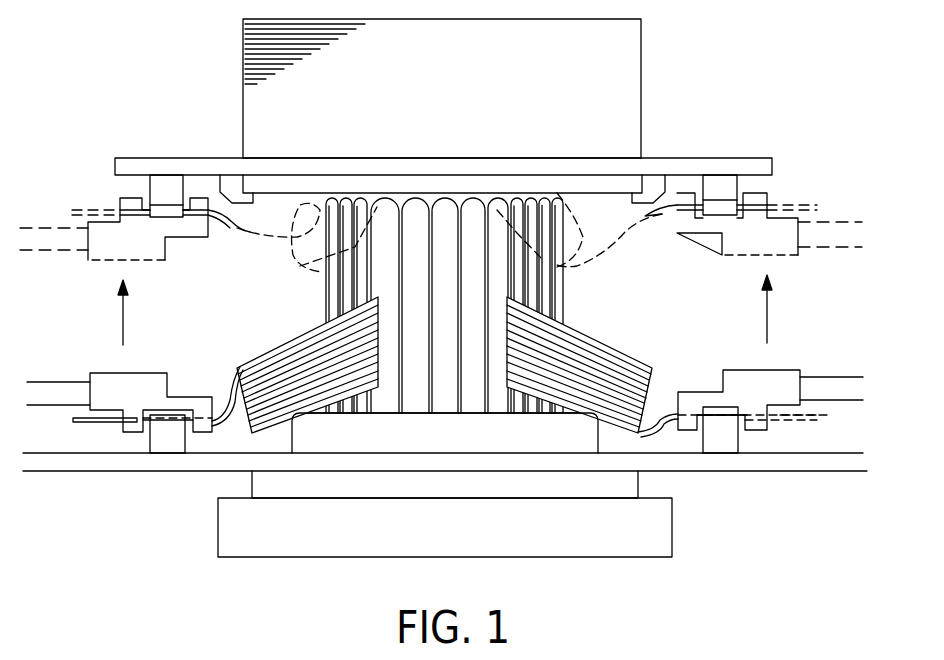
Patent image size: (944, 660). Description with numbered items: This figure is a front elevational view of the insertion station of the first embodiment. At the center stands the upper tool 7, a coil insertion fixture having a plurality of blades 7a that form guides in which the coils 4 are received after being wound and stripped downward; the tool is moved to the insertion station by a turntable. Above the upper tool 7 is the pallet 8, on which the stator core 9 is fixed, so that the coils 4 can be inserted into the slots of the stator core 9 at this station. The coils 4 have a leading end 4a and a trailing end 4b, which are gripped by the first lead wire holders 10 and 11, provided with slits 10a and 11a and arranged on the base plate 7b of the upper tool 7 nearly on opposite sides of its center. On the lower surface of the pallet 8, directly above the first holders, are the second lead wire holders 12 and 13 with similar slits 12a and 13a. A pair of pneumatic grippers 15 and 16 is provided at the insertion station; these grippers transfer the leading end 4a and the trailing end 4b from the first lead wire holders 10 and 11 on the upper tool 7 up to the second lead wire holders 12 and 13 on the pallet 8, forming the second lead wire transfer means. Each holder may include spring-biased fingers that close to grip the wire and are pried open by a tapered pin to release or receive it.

The coils 4 is at (290, 363).
The leading end 4a is at (790, 418).
The trailing end 4b is at (93, 423).
The upper tool 7 is at (318, 304).
The blades 7a is at (322, 290).
The base plate 7b is at (822, 460).
The pallet 8 is at (736, 160).
The stator core 9 is at (636, 62).
The first lead wire holder 10 is at (722, 443).
The slit 10a is at (712, 427).
The first lead wire holder 11 is at (168, 450).
The slit 11a is at (177, 430).
The second lead wire holder 12 is at (728, 186).
The slit 12a is at (712, 203).
The second lead wire holder 13 is at (160, 185).
The slit 13a is at (160, 215).
The pneumatic gripper 15 is at (772, 382).
The pneumatic gripper 16 is at (110, 390).